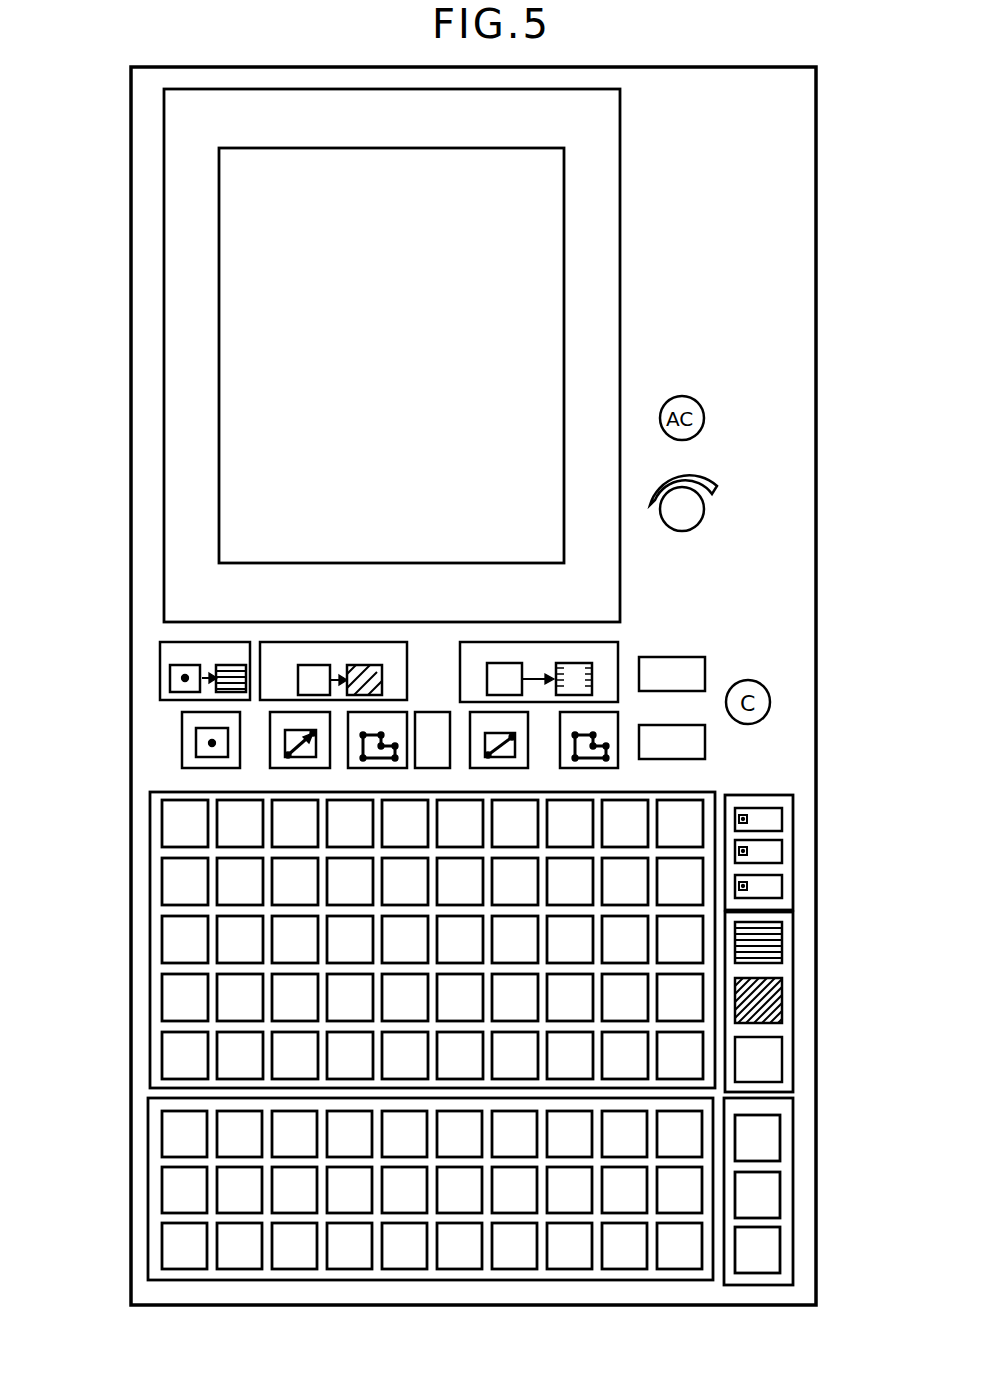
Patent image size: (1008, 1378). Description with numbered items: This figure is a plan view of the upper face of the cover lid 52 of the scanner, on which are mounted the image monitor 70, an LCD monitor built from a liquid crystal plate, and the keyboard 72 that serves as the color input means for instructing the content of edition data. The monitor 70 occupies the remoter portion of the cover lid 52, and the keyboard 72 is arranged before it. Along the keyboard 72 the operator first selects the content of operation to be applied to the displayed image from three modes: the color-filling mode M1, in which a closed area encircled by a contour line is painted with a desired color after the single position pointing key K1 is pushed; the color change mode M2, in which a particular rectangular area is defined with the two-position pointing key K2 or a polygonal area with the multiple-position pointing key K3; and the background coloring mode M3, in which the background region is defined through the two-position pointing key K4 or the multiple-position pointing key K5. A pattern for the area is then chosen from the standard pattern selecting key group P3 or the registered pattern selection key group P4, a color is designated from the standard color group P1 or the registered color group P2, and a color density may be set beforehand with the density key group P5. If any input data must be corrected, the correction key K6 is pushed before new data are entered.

The image monitor 70 is at (564, 253).
The cover lid 52 is at (819, 288).
The keyboard 72 is at (712, 647).
The color-filling mode M1 is at (160, 665).
The color change mode M2 is at (272, 642).
The background coloring mode M3 is at (472, 645).
The single position pointing key K1 is at (183, 732).
The two-position pointing key K2 is at (295, 712).
The multiple-position pointing key K3 is at (398, 712).
The two-position pointing key K4 is at (482, 712).
The multiple-position pointing key K5 is at (598, 712).
The correction key K6 is at (705, 745).
The standard color group P1 is at (149, 874).
The registered color group P2 is at (149, 1192).
The standard pattern selecting key group P3 is at (795, 985).
The registered pattern selection key group P4 is at (795, 1188).
The density key group P5 is at (795, 848).